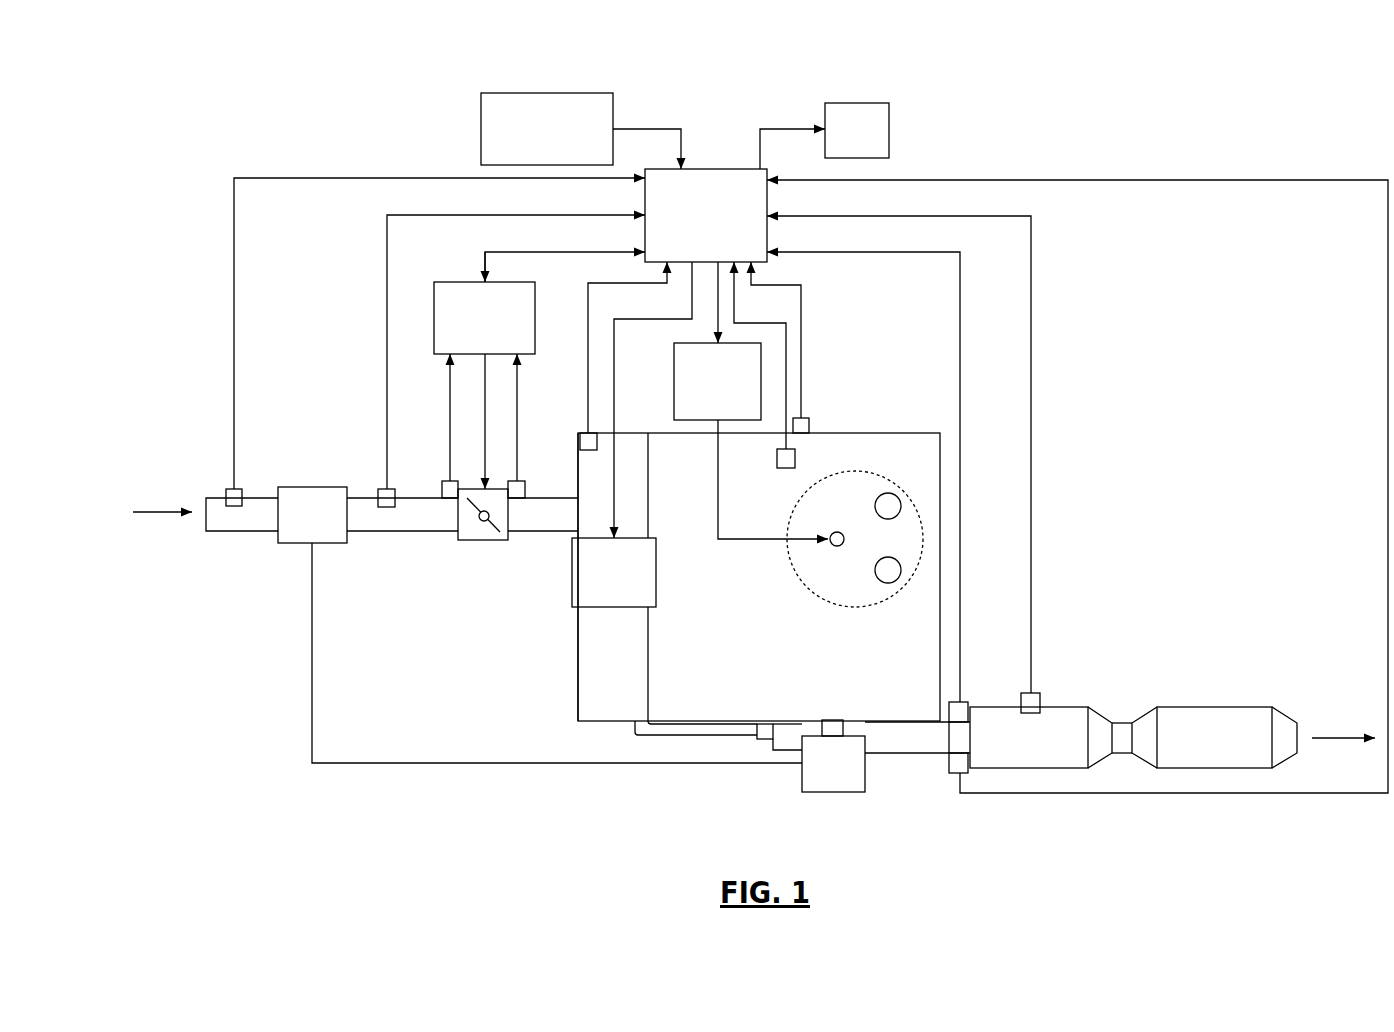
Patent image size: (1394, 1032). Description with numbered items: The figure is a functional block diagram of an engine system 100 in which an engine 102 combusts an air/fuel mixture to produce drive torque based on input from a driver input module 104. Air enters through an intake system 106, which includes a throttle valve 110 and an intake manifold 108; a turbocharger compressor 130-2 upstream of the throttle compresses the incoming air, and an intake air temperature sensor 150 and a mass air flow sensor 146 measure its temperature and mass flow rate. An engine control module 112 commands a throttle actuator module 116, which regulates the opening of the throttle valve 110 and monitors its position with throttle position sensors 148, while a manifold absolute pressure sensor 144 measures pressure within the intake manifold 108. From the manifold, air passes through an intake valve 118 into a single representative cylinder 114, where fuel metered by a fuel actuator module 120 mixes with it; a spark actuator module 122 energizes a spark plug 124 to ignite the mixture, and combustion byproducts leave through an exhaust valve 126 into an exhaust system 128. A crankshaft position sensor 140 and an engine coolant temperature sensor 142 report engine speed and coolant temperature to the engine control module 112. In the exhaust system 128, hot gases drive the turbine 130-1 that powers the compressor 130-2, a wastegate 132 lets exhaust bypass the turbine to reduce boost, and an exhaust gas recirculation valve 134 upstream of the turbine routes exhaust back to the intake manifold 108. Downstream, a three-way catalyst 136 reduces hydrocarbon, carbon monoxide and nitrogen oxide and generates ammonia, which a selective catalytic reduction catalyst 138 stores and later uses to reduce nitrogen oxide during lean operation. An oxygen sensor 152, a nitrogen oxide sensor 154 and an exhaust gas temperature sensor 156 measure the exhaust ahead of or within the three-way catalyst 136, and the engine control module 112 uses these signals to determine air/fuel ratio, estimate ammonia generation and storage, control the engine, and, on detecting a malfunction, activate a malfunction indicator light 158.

The engine system 100 is at (210, 87).
The engine 102 is at (838, 433).
The driver input module 104 is at (481, 127).
The intake system 106 is at (260, 617).
The intake manifold 108 is at (578, 655).
The throttle valve 110 is at (484, 540).
The engine control module 112 is at (707, 169).
The cylinder 114 is at (810, 602).
The throttle actuator module 116 is at (457, 282).
The intake valve 118 is at (888, 493).
The fuel actuator module 120 is at (637, 607).
The spark actuator module 122 is at (674, 367).
The spark plug 124 is at (835, 532).
The exhaust valve 126 is at (888, 583).
The exhaust system 128 is at (1313, 838).
The turbine 130-1 is at (865, 775).
The compressor 130-2 is at (298, 543).
The wastegate 132 is at (850, 722).
The exhaust gas recirculation valve 134 is at (763, 742).
The three-way catalyst 136 is at (1062, 707).
The selective catalytic reduction catalyst 138 is at (1254, 707).
The crankshaft position sensor 140 is at (801, 418).
The engine coolant temperature sensor 142 is at (786, 468).
The manifold absolute pressure sensor 144 is at (583, 433).
The mass air flow sensor 146 is at (380, 489).
The throttle position sensor 148 is at (450, 498).
The intake air temperature sensor 150 is at (228, 489).
The oxygen sensor 152 is at (968, 702).
The nitrogen oxide sensor 154 is at (952, 773).
The exhaust gas temperature sensor 156 is at (1038, 693).
The malfunction indicator light 158 is at (889, 132).